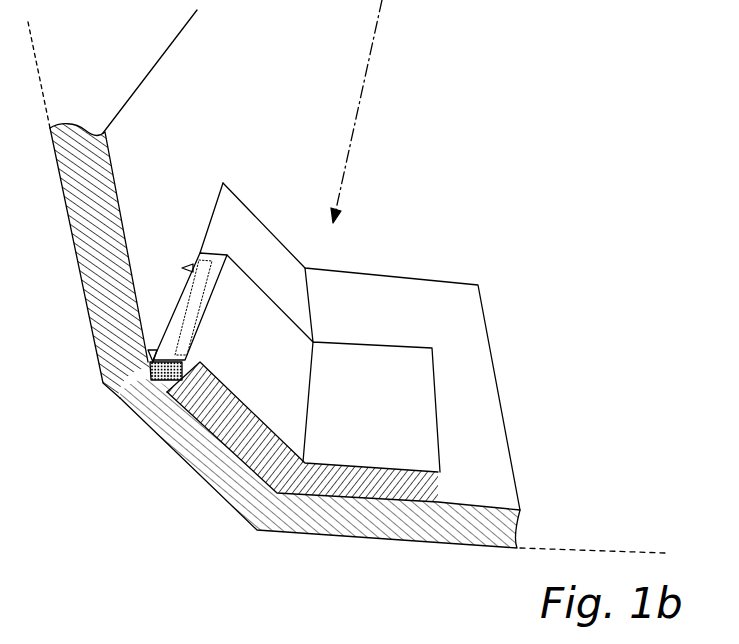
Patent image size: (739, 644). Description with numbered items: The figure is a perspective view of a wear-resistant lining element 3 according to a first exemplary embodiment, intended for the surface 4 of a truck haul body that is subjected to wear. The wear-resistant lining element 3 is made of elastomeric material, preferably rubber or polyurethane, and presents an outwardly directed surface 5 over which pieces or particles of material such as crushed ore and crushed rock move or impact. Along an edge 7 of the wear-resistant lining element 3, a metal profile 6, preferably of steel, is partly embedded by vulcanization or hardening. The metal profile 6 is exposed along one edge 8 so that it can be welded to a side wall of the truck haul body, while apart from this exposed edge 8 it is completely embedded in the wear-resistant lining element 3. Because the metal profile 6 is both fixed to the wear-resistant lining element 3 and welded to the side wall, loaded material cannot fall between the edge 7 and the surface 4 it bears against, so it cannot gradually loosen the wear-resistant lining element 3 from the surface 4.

The wear-resistant lining element 3 is at (289, 380).
The surface 4 is at (267, 258).
The outwardly directed surface 5 is at (263, 405).
The metal profile 6 is at (176, 401).
The edge 7 is at (175, 307).
The exposed edge 8 is at (176, 401).